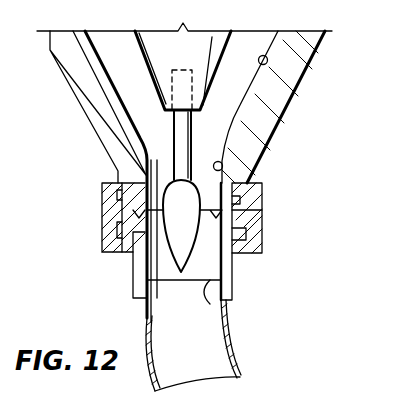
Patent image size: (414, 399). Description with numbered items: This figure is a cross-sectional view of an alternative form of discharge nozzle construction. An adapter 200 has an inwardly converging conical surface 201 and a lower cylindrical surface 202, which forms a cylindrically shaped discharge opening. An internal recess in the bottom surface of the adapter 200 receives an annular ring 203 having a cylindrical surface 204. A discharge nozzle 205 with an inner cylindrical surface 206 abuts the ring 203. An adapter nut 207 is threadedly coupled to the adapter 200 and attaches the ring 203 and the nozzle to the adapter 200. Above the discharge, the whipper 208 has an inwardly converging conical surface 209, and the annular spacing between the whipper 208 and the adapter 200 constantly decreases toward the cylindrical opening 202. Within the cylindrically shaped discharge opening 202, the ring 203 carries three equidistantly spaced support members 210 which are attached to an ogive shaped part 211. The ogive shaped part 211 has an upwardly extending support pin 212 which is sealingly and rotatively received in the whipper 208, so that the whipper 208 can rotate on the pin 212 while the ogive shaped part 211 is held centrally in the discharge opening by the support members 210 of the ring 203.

The adapter 200 is at (295, 100).
The inwardly converging conical surface 201 is at (265, 67).
The lower cylindrical surface 202 is at (222, 158).
The annular ring 203 is at (228, 197).
The cylindrical surface 204 is at (258, 228).
The discharge nozzle 205 is at (229, 268).
The inner cylindrical surface 206 is at (224, 312).
The adapter nut 207 is at (100, 249).
The whipper 208 is at (194, 52).
The inwardly converging conical surface 209 is at (147, 67).
The support members 210 is at (147, 170).
The ogive shaped part 211 is at (178, 245).
The support pin 212 is at (192, 155).